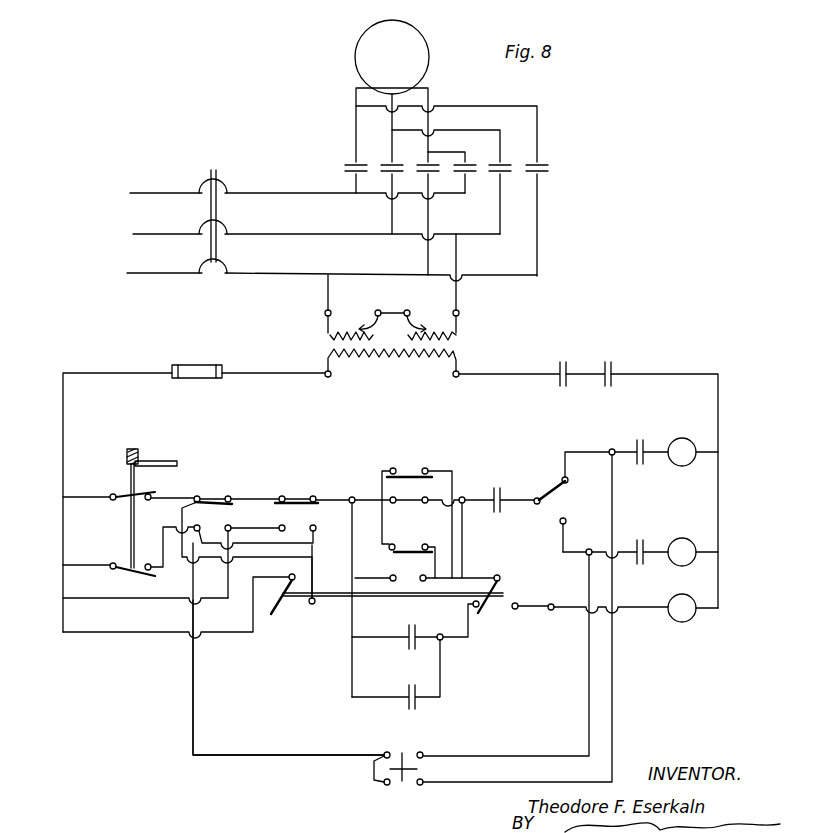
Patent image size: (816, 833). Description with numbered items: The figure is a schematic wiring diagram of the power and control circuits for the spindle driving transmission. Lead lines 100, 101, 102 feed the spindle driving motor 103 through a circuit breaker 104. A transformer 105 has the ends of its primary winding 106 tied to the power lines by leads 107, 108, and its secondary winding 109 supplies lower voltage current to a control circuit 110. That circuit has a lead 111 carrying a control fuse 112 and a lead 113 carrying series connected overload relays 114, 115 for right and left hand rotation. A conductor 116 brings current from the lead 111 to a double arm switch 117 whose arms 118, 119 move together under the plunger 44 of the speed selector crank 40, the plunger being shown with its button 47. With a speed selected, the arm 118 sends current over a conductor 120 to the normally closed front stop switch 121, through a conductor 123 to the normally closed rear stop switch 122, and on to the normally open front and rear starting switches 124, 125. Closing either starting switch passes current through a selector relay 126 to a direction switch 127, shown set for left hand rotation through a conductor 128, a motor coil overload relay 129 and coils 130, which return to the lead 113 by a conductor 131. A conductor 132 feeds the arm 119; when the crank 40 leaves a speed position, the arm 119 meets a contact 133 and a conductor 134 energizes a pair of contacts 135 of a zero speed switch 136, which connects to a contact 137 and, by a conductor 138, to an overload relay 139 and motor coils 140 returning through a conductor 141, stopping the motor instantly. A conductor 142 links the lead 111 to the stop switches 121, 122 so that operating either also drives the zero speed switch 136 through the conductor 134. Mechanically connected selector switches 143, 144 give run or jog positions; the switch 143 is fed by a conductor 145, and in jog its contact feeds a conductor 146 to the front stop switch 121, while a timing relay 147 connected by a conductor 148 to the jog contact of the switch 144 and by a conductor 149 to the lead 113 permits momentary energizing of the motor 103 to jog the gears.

The speed selector crank 40 is at (178, 455).
The plunger 44 is at (130, 473).
The push button 47 is at (132, 448).
The lead line 100 is at (142, 190).
The lead line 101 is at (142, 232).
The lead line 102 is at (140, 272).
The spindle driving motor 103 is at (419, 53).
The circuit breaker 104 is at (207, 229).
The transformer 105 is at (470, 346).
The primary winding 106 is at (392, 309).
The lead 107 is at (467, 297).
The lead 108 is at (318, 299).
The secondary winding 109 is at (387, 369).
The control circuit 110 is at (294, 365).
The lead 111 is at (61, 411).
The control fuse 112 is at (201, 368).
The lead 113 is at (722, 413).
The overload relay 114 is at (551, 370).
The overload relay 115 is at (621, 367).
The conductor 116 is at (87, 493).
The double arm switch 117 is at (127, 522).
The switch arm 118 is at (145, 500).
The switch arm 119 is at (148, 565).
The conductor 120 is at (190, 485).
The front stop switch 121 is at (212, 506).
The rear stop switch 122 is at (290, 507).
The conductor 123 is at (270, 492).
The front starting switch 124 is at (401, 478).
The rear starting switch 125 is at (408, 548).
The selector relay 126 is at (503, 509).
The switch 127 is at (555, 503).
The conductor 128 is at (585, 442).
The motor coil overload relay 129 is at (636, 448).
The coils 130 is at (685, 437).
The conductor 131 is at (707, 461).
The conductor 132 is at (88, 565).
The switch contact 133 is at (153, 570).
The conductor 134 is at (196, 700).
The contacts 135 is at (384, 783).
The zero speed switch 136 is at (413, 752).
The contact 137 is at (423, 758).
The conductor 138 is at (530, 744).
The motor coil overload relay 139 is at (636, 548).
The motor coils 140 is at (684, 537).
The conductor 141 is at (685, 602).
The conductor 142 is at (133, 599).
The selector switch 143 is at (285, 604).
The selector switch 144 is at (489, 612).
The conductor 145 is at (121, 633).
The conductor 146 is at (313, 572).
The timing relay 147 is at (681, 623).
The conductor 148 is at (635, 600).
The conductor 149 is at (712, 616).